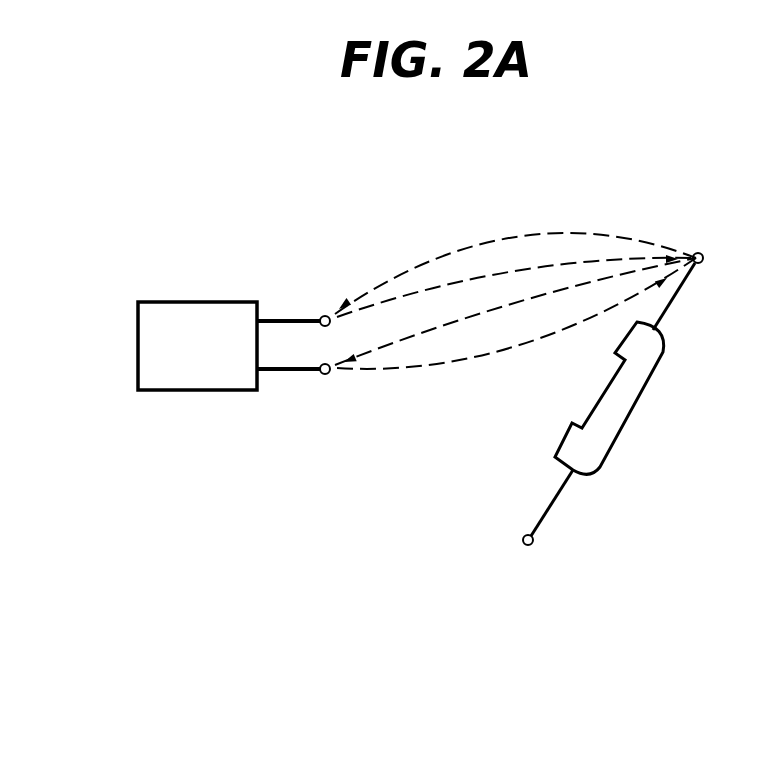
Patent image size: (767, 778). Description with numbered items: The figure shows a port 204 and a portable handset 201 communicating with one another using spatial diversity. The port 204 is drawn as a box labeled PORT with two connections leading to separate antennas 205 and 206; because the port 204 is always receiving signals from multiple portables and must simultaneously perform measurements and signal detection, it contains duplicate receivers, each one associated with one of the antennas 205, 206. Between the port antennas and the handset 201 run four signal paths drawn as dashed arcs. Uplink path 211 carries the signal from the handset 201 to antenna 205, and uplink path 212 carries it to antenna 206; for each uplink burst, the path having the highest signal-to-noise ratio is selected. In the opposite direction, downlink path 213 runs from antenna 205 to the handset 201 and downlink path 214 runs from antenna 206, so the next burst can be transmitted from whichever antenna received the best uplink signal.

The portable handset 201 is at (628, 415).
The port 204 is at (185, 392).
The antenna 205 is at (280, 373).
The antenna 206 is at (297, 318).
The path 211 is at (412, 337).
The path 212 is at (402, 270).
The path 213 is at (488, 353).
The path 214 is at (507, 272).